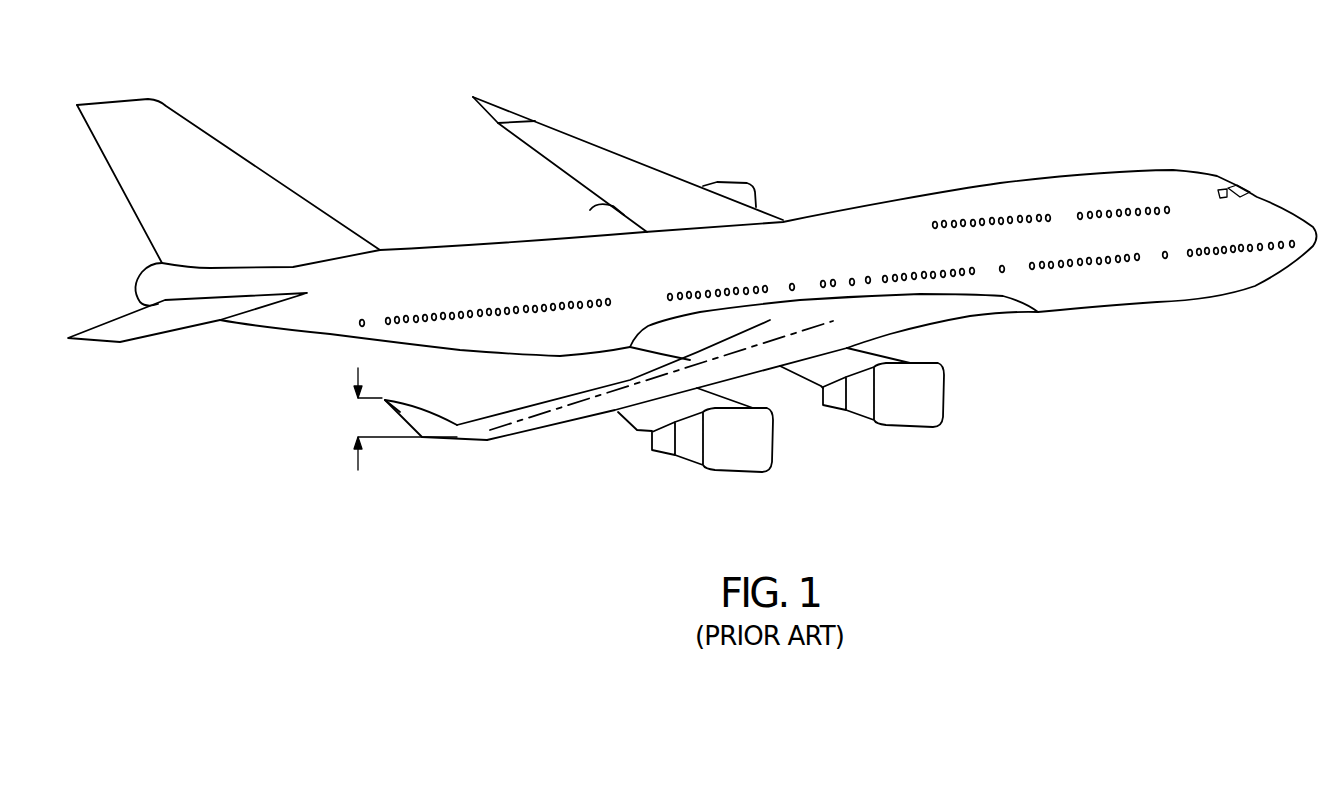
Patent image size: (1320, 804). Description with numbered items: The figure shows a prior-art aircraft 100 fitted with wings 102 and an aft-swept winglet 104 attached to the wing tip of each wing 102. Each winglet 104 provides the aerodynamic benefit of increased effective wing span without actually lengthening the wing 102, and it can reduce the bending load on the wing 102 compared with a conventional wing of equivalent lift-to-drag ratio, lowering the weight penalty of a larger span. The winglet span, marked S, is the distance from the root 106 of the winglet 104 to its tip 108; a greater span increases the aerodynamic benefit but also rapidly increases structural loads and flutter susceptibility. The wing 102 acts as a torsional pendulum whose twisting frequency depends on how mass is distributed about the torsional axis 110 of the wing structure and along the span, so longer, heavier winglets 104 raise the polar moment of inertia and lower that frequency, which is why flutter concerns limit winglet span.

The aircraft 100 is at (1002, 107).
The wing 102 is at (652, 172).
The aft-swept winglet 104 is at (490, 100).
The root of the winglet 106 is at (455, 442).
The tip of the winglet 108 is at (398, 400).
The torsional axis 110 is at (550, 413).